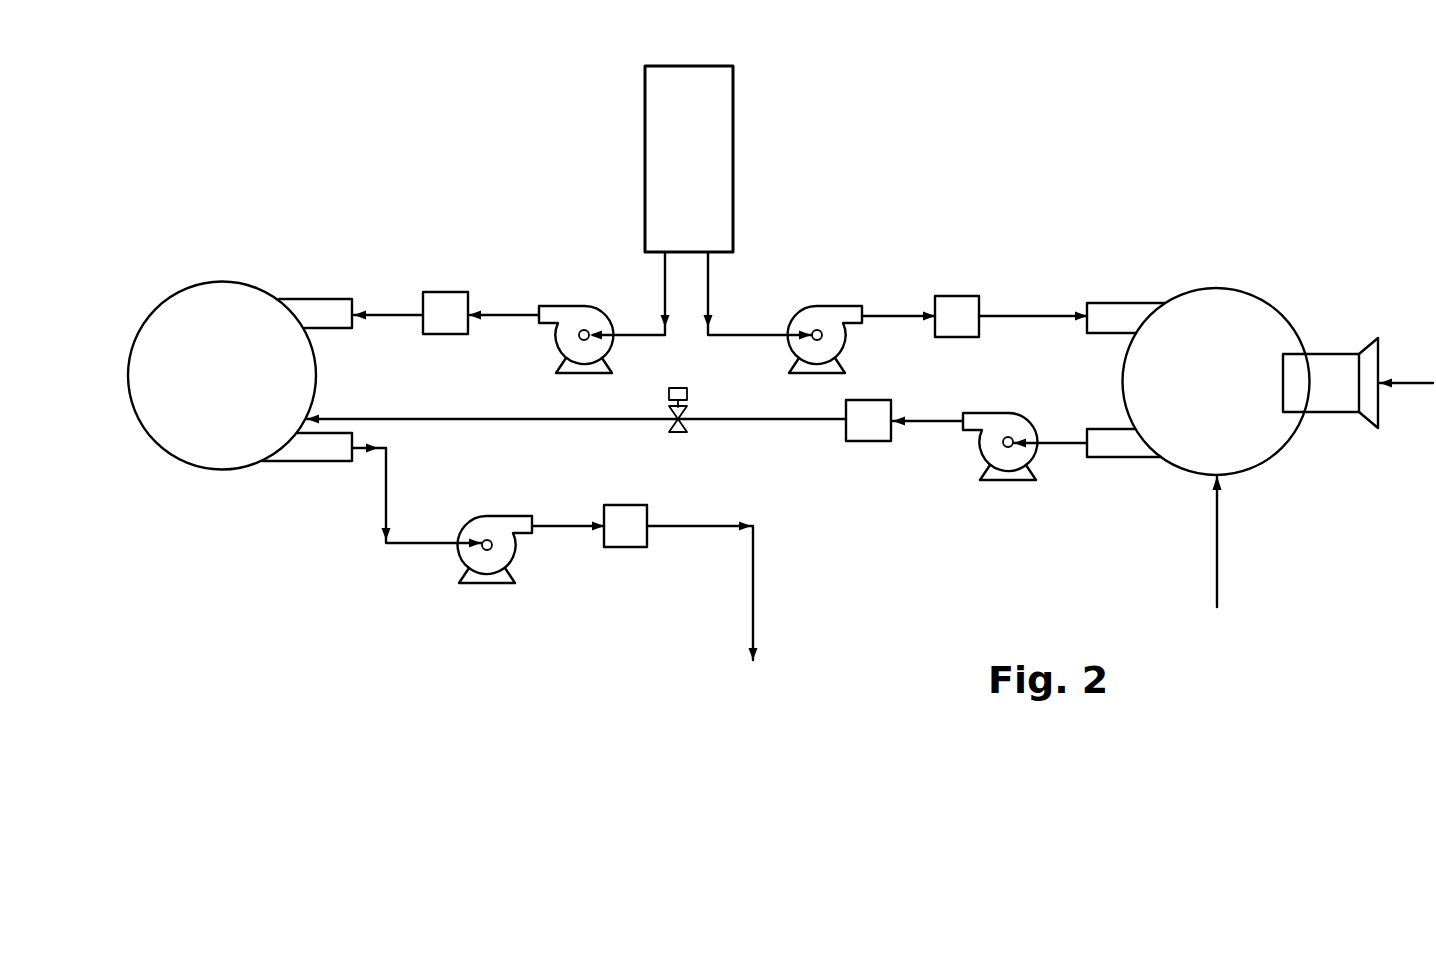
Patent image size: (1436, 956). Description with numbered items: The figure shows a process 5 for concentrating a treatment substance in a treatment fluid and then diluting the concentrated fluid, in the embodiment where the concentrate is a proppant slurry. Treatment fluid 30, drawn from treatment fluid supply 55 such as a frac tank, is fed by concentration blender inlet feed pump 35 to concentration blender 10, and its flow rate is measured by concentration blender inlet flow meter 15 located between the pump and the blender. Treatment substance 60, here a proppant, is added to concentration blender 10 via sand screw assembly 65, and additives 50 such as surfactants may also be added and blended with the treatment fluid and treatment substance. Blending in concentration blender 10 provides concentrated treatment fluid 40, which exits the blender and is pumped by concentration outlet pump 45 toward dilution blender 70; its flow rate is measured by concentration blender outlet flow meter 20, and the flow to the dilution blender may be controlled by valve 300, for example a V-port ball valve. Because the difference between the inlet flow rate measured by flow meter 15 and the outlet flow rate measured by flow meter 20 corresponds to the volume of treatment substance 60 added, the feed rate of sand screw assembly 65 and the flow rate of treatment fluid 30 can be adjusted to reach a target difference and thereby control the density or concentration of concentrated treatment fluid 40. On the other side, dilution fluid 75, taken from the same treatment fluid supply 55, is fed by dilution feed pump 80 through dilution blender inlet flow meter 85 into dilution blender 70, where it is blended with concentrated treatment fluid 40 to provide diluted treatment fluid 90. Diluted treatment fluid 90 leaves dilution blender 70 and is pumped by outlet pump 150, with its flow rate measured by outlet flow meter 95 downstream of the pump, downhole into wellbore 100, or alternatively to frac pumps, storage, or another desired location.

The process 5 is at (1187, 186).
The concentration blender 10 is at (1228, 288).
The concentration blender inlet flow meter 15 is at (957, 296).
The concentration blender outlet flow meter 20 is at (868, 441).
The treatment fluid 30 is at (708, 290).
The concentration blender inlet feed pump 35 is at (830, 306).
The concentrated treatment fluid 40 is at (1062, 443).
The concentration outlet pump 45 is at (985, 413).
The additives 50 is at (1218, 530).
The treatment fluid supply 55 is at (733, 123).
The treatment substance 60 is at (1433, 383).
The sand screw assembly 65 is at (1322, 354).
The dilution blender 70 is at (236, 282).
The dilution fluid 75 is at (665, 270).
The dilution feed pump 80 is at (572, 306).
The dilution blender inlet flow meter 85 is at (455, 292).
The diluted treatment fluid 90 is at (388, 485).
The outlet flow meter 95 is at (625, 505).
The wellbore 100 is at (753, 695).
The outlet pump 150 is at (497, 516).
The valve 300 is at (687, 392).